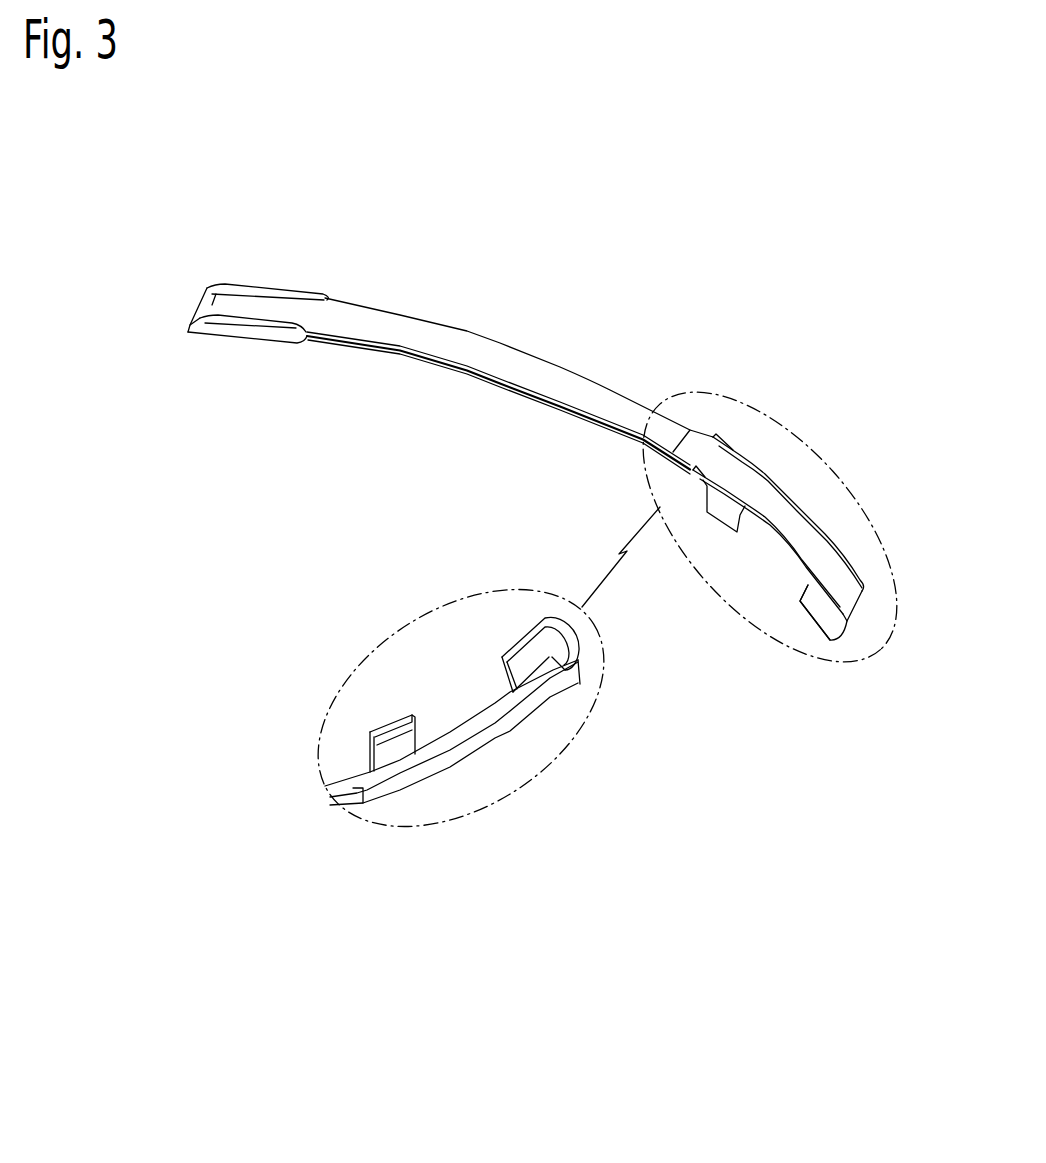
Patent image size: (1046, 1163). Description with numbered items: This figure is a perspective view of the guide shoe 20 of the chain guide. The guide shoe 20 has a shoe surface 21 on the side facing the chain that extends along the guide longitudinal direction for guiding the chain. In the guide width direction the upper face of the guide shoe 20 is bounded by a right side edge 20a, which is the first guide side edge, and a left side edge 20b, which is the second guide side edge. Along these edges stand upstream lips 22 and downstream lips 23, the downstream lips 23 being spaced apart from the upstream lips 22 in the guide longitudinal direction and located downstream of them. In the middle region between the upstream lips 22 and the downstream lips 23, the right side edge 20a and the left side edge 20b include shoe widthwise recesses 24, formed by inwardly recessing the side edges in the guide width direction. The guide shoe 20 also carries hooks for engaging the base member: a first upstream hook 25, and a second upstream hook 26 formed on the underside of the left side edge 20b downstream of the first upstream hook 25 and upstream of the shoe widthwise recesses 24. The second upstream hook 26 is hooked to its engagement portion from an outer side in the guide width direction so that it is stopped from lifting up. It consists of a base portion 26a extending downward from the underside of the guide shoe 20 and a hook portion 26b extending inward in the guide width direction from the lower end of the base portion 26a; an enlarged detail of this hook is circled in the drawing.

The guide shoe 20 is at (152, 190).
The right side edge 20a is at (357, 300).
The left side edge 20b is at (343, 347).
The shoe surface 21 is at (552, 378).
The upstream lips 22 is at (807, 508).
The downstream lips 23 is at (275, 283).
The shoe widthwise recesses 24 is at (466, 332).
The first upstream hook 25 is at (832, 624).
The second upstream hook 26 is at (718, 512).
The base portion 26a is at (384, 753).
The hook portion 26b is at (412, 740).